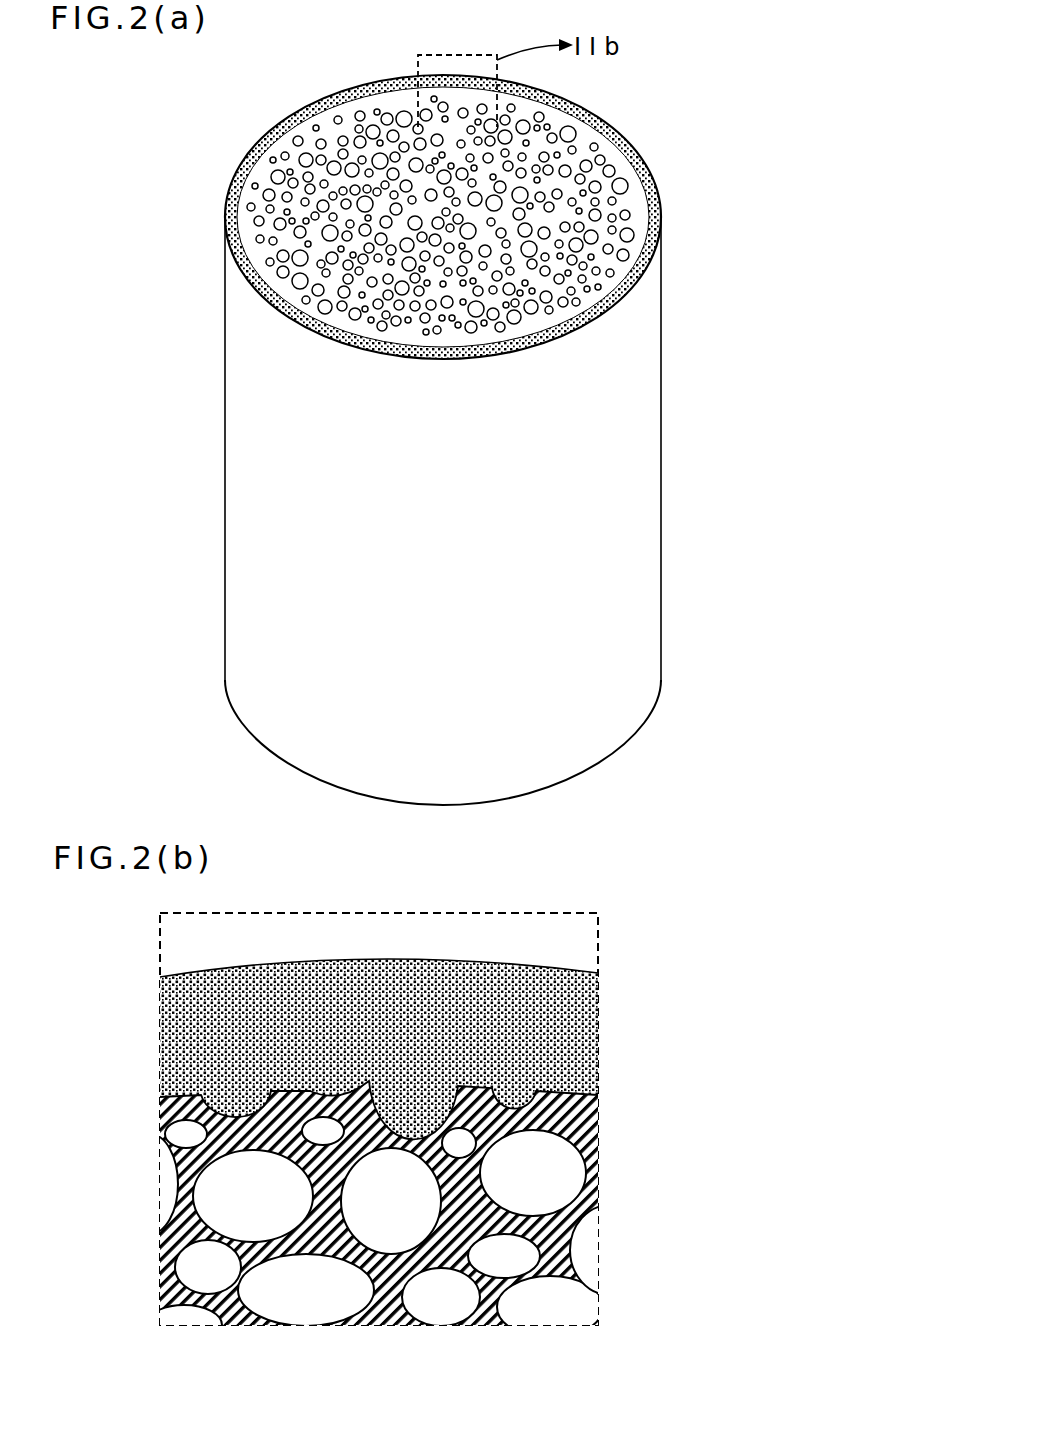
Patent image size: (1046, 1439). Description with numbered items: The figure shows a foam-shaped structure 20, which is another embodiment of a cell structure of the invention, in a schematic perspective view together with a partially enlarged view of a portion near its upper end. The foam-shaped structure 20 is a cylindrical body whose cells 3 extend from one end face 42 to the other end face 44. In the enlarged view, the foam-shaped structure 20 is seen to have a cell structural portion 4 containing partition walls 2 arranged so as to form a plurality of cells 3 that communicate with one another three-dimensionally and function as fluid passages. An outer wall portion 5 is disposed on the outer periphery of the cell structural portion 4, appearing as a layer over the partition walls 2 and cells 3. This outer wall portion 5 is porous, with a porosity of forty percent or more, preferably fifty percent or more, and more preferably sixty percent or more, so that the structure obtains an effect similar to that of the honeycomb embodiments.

In FIG. 2A, the foam-shaped structure 20 is at (880, 61).
In FIG. 2A, the one end face 42 is at (215, 200).
In FIG. 2A, the other end face 44 is at (252, 746).
In FIG. 2B, the outer wall portion 5 is at (598, 1036).
In FIG. 2B, the cell structural portion 4 is at (625, 1134).
In FIG. 2B, the cells 3 is at (572, 1178).
In FIG. 2B, the partition walls 2 is at (565, 1222).